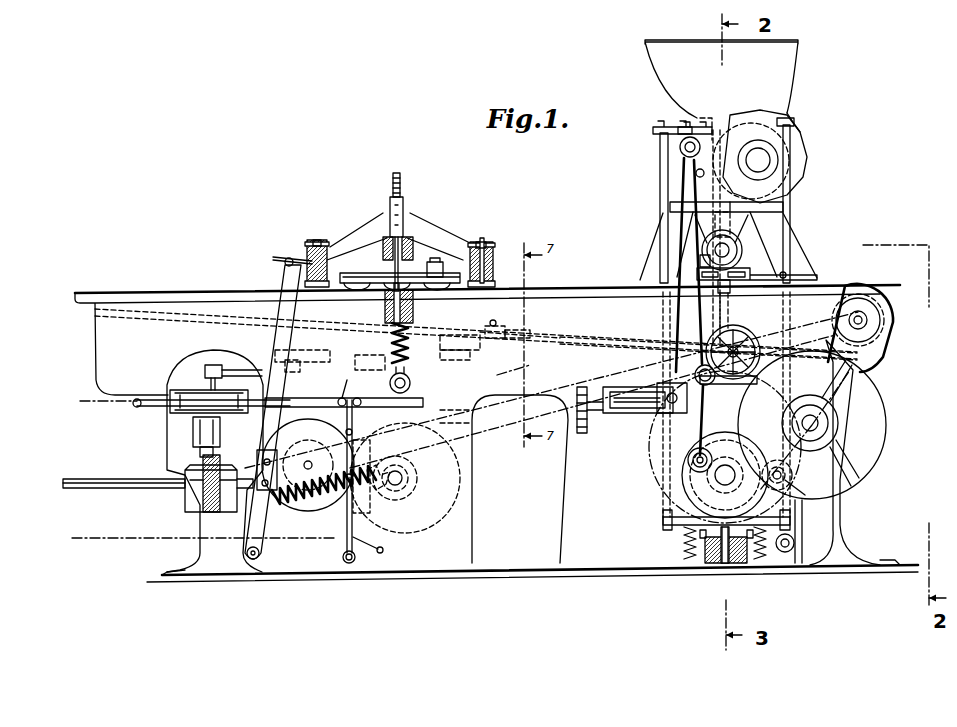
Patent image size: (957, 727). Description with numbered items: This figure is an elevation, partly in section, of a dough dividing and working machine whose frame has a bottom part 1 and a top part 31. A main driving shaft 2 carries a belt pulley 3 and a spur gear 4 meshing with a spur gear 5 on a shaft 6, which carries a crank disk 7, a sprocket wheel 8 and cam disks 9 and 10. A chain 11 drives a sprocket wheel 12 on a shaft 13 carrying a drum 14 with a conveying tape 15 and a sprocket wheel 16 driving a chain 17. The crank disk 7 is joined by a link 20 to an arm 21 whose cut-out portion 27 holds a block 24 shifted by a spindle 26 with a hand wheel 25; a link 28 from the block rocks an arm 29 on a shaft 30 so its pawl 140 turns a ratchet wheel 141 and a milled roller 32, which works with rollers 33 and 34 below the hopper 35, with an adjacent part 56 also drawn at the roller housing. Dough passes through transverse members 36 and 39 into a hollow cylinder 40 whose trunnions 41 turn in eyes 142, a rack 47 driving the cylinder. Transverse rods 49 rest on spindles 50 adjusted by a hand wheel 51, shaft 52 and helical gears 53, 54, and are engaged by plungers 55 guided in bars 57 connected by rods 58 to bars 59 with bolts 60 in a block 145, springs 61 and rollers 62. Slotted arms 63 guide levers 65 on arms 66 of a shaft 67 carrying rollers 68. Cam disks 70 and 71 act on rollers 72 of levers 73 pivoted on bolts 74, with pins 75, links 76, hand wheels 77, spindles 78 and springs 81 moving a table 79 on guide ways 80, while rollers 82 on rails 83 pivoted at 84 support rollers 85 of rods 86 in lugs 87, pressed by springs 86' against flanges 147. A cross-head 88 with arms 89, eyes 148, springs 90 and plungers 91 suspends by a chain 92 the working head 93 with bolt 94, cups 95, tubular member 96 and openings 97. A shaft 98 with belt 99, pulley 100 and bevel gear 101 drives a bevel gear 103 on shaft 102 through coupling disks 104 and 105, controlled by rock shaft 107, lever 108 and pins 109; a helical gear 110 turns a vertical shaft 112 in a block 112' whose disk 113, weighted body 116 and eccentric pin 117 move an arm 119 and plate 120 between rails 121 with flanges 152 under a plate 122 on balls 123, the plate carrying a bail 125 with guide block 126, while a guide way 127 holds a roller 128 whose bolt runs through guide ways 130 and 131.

The bottom part of frame 1 is at (832, 567).
The main driving shaft 2 is at (820, 420).
The belt pulley 3 is at (887, 421).
The spur gear 4 is at (832, 432).
The spur gear 5 is at (765, 460).
The shaft 6 is at (715, 476).
The crank disk 7 is at (722, 432).
The sprocket wheel 8 is at (752, 460).
The cam disks 9 is at (733, 436).
The cam disks 10 is at (708, 486).
The chain 11 is at (830, 370).
The sprocket wheel 12 is at (896, 326).
The shaft 13 is at (870, 303).
The drum 14 is at (873, 308).
The conveying tape 15 is at (150, 292).
The sprocket wheel 16 is at (806, 352).
The chain 17 is at (548, 425).
The link 20 is at (700, 420).
The arm 21 is at (640, 413).
The block 24 is at (660, 388).
The hand wheel 25 is at (590, 418).
The screw-threaded spindle 26 is at (620, 387).
The cut-out portion 27 is at (757, 382).
The link 28 is at (683, 300).
The arm 29 is at (693, 137).
The shaft 30 is at (770, 158).
The top part of frame 31 is at (790, 250).
The roller 32 is at (795, 163).
The roller 33 is at (692, 126).
The roller 34 is at (660, 181).
The hopper 35 is at (790, 90).
The transverse member 36 is at (732, 230).
The transverse member 39 is at (770, 210).
The hollow cylinder 40 is at (737, 252).
The trunnions 41 is at (715, 255).
The rack 47 is at (700, 258).
The transverse rods 49 is at (730, 285).
The spindles 50 is at (718, 318).
The hand wheel 51 is at (775, 338).
The shaft 52 is at (780, 350).
The helical gear wheels 53 is at (737, 330).
The helical gear wheels 54 is at (702, 366).
The plungers 55 is at (670, 207).
The gear 56 is at (757, 160).
The bars 57 is at (653, 131).
The vertical rods 58 is at (661, 238).
The bars 59 is at (684, 530).
The vertical bolts 60 is at (725, 565).
The coiled springs 61 is at (690, 560).
The roller 62 is at (780, 518).
The longitudinally slotted arms 63 is at (748, 272).
The levers 65 is at (788, 272).
The arms 66 is at (798, 515).
The shaft 67 is at (795, 543).
The roller 68 is at (800, 490).
The cam disks 70 is at (305, 530).
The cam disks 71 is at (297, 513).
The rollers 72 is at (257, 462).
The levers 73 is at (248, 545).
The bolts 74 is at (254, 560).
The pins 75 is at (280, 322).
The links 76 is at (304, 350).
The hand wheels 77 is at (286, 257).
The screw-threaded spindles 78 is at (285, 264).
The table 79 is at (415, 292).
The guide ways 80 is at (445, 292).
The helical springs 81 is at (347, 535).
The rollers 82 is at (313, 457).
The rails 83 is at (423, 400).
The rail pivot 84 is at (137, 408).
The rollers 85 is at (412, 355).
The vertical rods 86 is at (465, 343).
The coiled springs 86' is at (461, 361).
The lugs 87 is at (412, 345).
The cross-head 88 is at (400, 180).
The arms 89 is at (408, 238).
The springs 90 is at (490, 272).
The plungers 91 is at (484, 240).
The chain 92 is at (403, 208).
The working head 93 is at (380, 273).
The bolt 94 is at (404, 240).
The working cells or cups 95 is at (392, 294).
The tubular member 96 is at (435, 248).
The openings 97 is at (438, 260).
The shaft 98 is at (400, 485).
The belt 99 is at (116, 538).
The belt pulley 100 is at (437, 515).
The bevel gear wheel 101 is at (410, 476).
The shaft 102 is at (130, 488).
The bevel gear wheel 103 is at (388, 468).
The coupling disk 104 is at (388, 500).
The disk 105 is at (347, 485).
The rock shaft 107 is at (348, 563).
The lever 108 is at (366, 547).
The pins 109 is at (343, 395).
The helical gear wheel 110 is at (203, 510).
The vertical shaft 112 is at (189, 454).
The block 112' is at (188, 483).
The disk 113 is at (195, 420).
The weighted body 116 is at (170, 390).
The eccentric pin 117 is at (214, 371).
The arm 119 is at (245, 370).
The plate 120 is at (493, 320).
The rails 121 is at (520, 339).
The plate 122 is at (530, 330).
The balls 123 is at (380, 340).
The bail 125 is at (400, 228).
The guide block 126 is at (318, 242).
The guide way 127 is at (410, 384).
The roller 128 is at (301, 364).
The guide way 130 is at (474, 411).
The guide way 131 is at (470, 429).
The pawl 140 is at (707, 140).
The ratchet wheel 141 is at (798, 135).
The eyes 142 is at (738, 242).
The block 145 is at (712, 570).
The flanges 147 is at (370, 363).
The eyes 148 is at (317, 248).
The flanges 152 is at (521, 365).